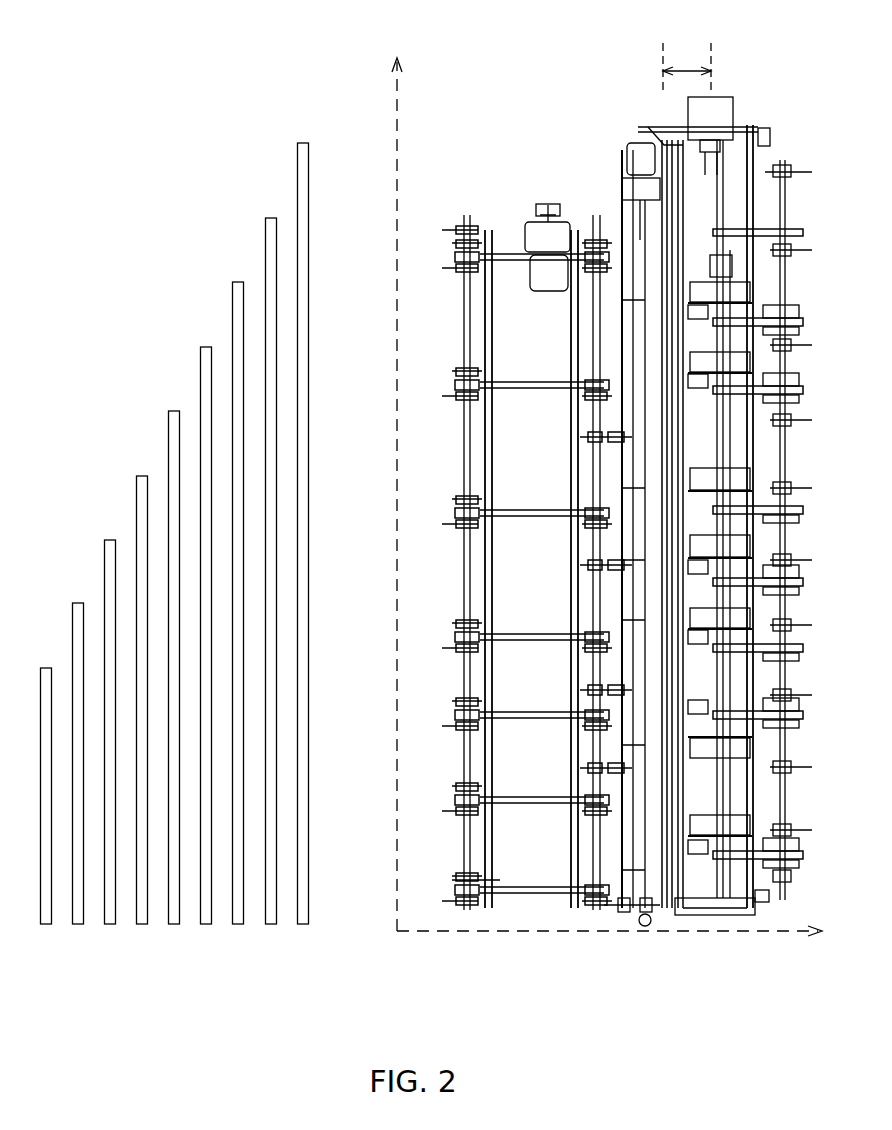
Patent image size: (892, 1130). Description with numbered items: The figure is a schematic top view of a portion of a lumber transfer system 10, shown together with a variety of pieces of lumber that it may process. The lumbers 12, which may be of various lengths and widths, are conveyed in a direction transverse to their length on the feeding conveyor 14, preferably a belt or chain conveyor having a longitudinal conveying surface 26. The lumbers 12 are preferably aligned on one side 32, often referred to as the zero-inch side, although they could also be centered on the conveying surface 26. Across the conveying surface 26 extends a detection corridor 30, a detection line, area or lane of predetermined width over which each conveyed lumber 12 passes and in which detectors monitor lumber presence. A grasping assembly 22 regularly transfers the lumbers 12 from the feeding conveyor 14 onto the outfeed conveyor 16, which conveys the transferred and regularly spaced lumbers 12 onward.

The lumber transfer system 10 is at (780, 107).
The lumbers 12 is at (309, 930).
The feeding conveyor 14 is at (683, 933).
The outfeed conveyor 16 is at (722, 997).
The grasping assembly 22 is at (690, 933).
The longitudinal conveying surface 26 is at (360, 598).
The detection corridor 30 is at (685, 70).
The side 32 is at (410, 932).